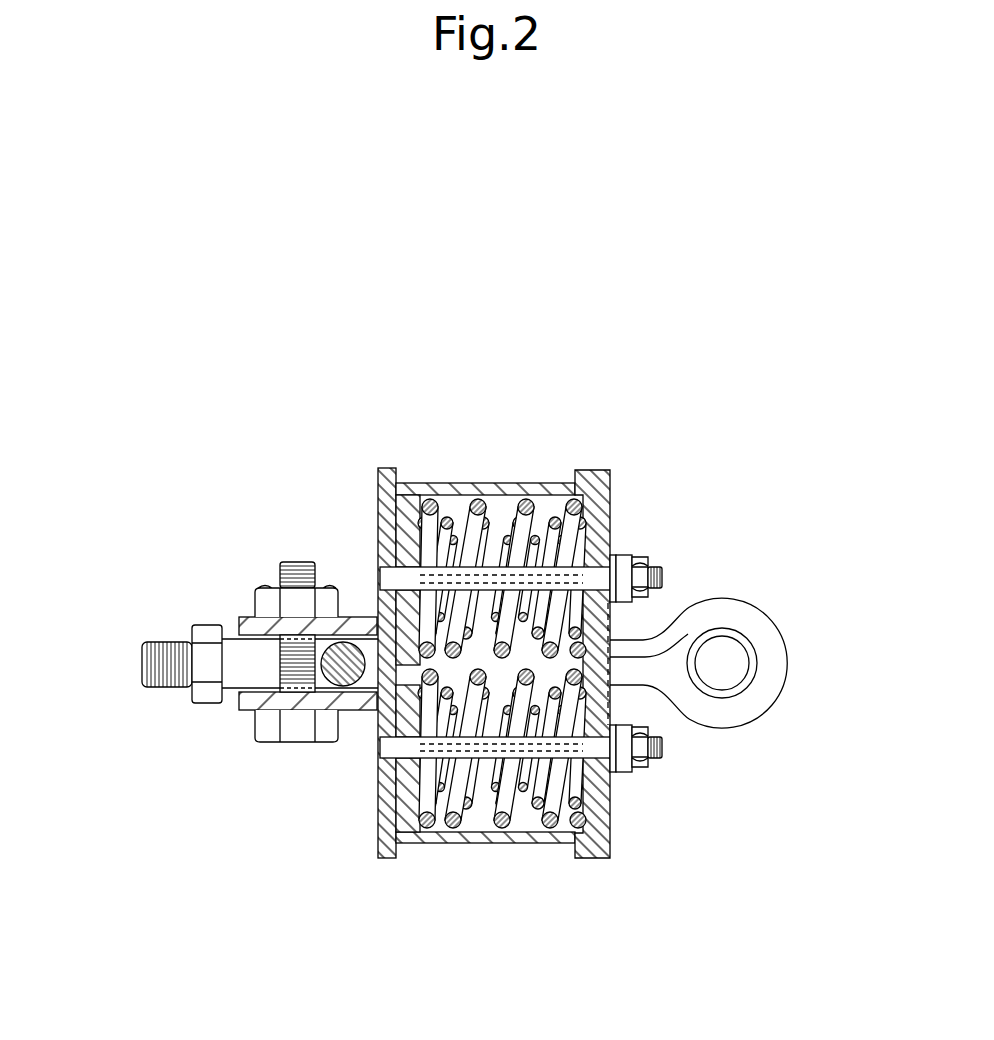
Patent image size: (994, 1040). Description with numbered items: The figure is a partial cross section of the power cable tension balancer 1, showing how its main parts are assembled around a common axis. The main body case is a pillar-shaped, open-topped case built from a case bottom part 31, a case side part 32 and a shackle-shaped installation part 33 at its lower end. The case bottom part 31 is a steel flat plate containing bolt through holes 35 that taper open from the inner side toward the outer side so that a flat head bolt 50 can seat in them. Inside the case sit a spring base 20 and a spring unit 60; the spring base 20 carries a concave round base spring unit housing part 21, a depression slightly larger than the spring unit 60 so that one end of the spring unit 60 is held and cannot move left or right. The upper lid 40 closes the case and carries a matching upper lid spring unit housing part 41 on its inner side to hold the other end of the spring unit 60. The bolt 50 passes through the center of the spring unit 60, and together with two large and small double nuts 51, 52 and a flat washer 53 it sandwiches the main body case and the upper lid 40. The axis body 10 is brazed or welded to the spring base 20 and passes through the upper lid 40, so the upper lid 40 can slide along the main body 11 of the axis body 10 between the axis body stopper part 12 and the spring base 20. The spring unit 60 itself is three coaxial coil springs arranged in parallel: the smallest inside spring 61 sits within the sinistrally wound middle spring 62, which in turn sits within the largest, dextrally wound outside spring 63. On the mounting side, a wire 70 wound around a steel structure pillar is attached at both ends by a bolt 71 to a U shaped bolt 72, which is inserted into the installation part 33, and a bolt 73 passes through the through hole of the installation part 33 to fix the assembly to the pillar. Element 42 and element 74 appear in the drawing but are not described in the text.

The power cable tension balancer 1 is at (478, 388).
The axis body 10 is at (739, 636).
The main body of the axis body 11 is at (690, 634).
The axis body stopper part 12 is at (758, 693).
The spring base 20 is at (402, 556).
The base spring unit housing part 21 is at (422, 530).
The case bottom part 31 is at (390, 488).
The case side part 32 is at (545, 483).
The installation part 33 is at (353, 710).
The bolt through hole 35 is at (382, 765).
The upper lid 40 is at (595, 495).
The upper lid spring unit housing part 41 is at (587, 530).
The guide rod 42 is at (610, 622).
The bolt 50 is at (663, 748).
The large nut 51 is at (628, 772).
The small nut 52 is at (649, 768).
The flat washer 53 is at (616, 772).
The spring unit 60 is at (486, 754).
The inside spring 61 is at (502, 721).
The middle spring 62 is at (463, 840).
The outside spring 63 is at (424, 840).
The wire 70 is at (153, 669).
The bolt 71 is at (198, 692).
The U shaped bolt 72 is at (247, 655).
The bolt 73 is at (265, 742).
The clamp bolt 74 is at (260, 598).